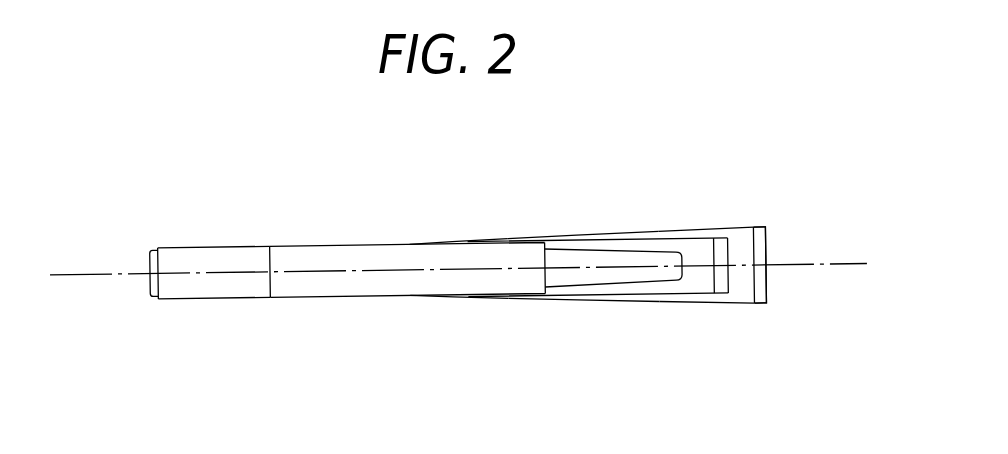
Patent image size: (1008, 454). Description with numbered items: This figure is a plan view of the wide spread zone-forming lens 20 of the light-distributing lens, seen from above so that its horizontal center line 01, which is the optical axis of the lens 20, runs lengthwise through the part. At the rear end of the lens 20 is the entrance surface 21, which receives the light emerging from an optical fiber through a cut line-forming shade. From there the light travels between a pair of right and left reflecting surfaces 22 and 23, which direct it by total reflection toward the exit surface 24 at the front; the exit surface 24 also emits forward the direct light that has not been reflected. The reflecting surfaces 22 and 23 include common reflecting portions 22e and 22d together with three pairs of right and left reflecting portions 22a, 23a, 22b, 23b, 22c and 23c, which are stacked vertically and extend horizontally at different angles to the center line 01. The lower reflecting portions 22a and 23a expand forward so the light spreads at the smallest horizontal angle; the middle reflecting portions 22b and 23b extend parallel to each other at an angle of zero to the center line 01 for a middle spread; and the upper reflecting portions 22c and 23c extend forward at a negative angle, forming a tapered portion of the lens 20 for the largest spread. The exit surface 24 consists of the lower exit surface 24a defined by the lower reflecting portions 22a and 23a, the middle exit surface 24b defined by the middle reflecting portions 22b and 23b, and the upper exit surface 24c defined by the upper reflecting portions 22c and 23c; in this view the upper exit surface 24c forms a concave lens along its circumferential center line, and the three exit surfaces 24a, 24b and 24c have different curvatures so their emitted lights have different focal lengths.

The wide spread zone-forming lens 20 is at (460, 262).
The horizontal center line 01 is at (68, 280).
The entrance surface 21 is at (148, 264).
The reflecting surface 22 is at (448, 278).
The lower reflecting portion 22a is at (693, 304).
The middle reflecting portion 22b is at (628, 300).
The upper reflecting portion 22c is at (567, 251).
The common reflecting portion 22d is at (203, 300).
The common reflecting portion 22e is at (203, 246).
The reflecting surface 23 is at (539, 231).
The lower reflecting portion 23a is at (698, 228).
The middle reflecting portion 23b is at (630, 236).
The upper reflecting portion 23c is at (577, 246).
The exit surface 24 is at (708, 286).
The lower exit surface 24a is at (762, 241).
The middle exit surface 24b is at (722, 279).
The upper exit surface 24c is at (603, 272).